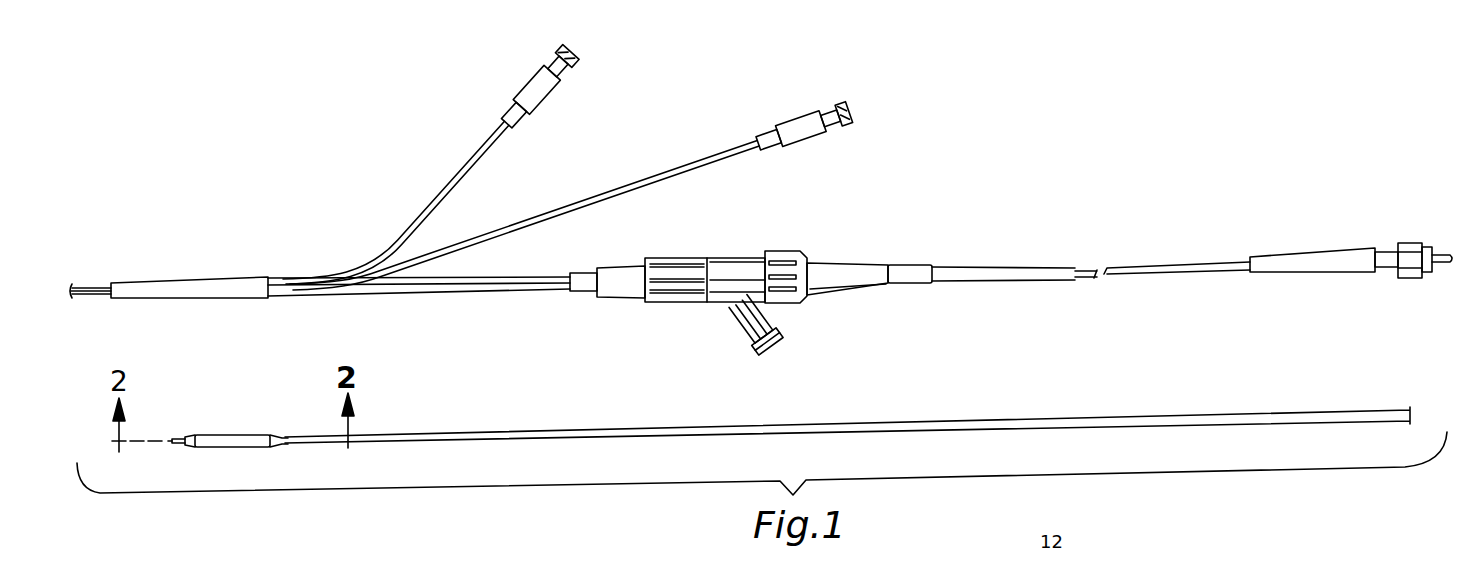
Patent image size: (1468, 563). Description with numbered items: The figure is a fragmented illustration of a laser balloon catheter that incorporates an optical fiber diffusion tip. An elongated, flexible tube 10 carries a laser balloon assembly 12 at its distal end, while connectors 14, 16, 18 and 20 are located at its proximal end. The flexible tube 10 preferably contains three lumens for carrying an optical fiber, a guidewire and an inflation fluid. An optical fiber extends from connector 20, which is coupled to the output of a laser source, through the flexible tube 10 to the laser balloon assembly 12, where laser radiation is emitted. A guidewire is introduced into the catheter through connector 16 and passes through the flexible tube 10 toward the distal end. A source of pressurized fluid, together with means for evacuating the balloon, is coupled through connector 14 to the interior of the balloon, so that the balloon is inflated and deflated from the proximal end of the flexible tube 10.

The flexible tube 10 is at (940, 423).
The laser balloon assembly 12 is at (229, 430).
The connector 14 is at (520, 88).
The connector 16 is at (802, 113).
The connector 18 is at (745, 328).
The connector 20 is at (1412, 243).